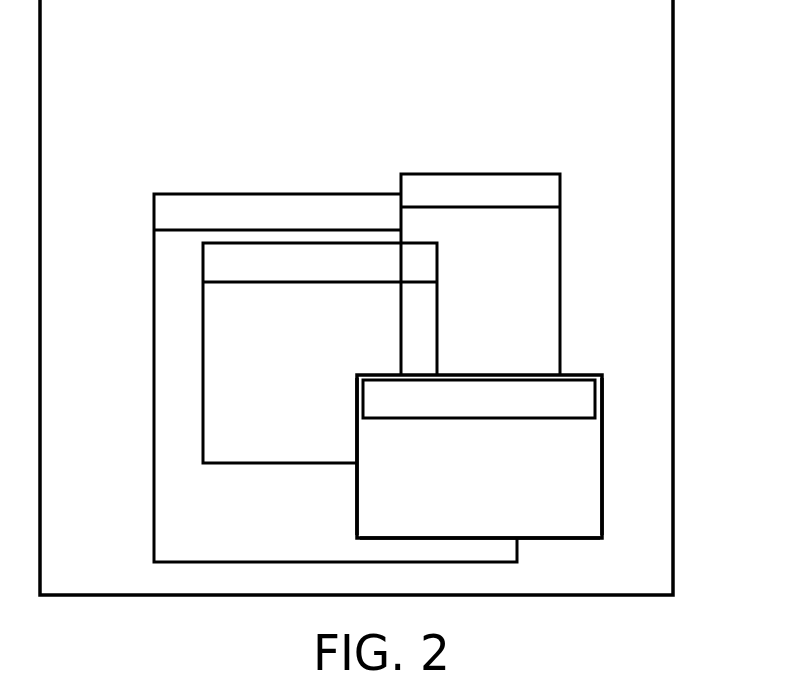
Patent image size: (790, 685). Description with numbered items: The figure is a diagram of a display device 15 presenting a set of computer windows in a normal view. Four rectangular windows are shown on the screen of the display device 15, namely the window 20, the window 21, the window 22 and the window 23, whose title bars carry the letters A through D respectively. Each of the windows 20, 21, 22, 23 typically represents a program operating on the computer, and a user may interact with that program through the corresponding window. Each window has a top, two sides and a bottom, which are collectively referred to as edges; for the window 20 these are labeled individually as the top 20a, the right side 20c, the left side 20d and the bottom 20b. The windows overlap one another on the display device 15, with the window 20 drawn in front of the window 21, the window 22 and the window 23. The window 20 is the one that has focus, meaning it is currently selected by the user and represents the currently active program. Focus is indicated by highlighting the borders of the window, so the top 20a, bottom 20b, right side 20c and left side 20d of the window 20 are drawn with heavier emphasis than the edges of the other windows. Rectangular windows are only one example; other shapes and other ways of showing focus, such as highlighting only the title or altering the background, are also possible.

The display device 15 is at (123, 597).
The window 20 is at (485, 454).
The top 20a is at (580, 372).
The bottom 20b is at (535, 540).
The right side 20c is at (602, 490).
The left side 20d is at (357, 518).
The window 21 is at (250, 464).
The window 22 is at (560, 248).
The window 23 is at (155, 364).